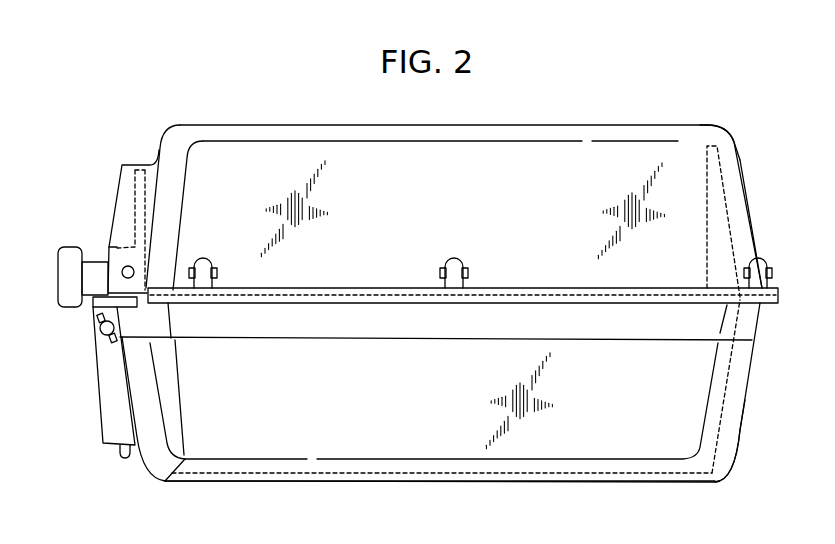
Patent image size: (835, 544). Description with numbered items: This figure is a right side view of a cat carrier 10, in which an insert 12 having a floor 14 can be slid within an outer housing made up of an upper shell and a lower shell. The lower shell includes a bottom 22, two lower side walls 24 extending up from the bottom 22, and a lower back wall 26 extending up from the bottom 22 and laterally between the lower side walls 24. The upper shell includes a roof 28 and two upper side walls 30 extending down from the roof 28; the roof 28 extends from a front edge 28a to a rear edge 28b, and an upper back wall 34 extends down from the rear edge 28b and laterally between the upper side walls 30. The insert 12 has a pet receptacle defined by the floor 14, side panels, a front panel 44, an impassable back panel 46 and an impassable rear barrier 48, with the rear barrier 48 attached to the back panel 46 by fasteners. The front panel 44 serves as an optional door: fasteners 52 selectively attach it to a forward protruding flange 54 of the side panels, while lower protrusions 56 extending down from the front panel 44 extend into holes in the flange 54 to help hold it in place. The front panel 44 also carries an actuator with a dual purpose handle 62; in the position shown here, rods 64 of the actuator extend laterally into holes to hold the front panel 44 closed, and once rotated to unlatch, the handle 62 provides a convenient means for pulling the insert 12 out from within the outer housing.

The cat carrier 10 is at (112, 82).
The insert 12 is at (147, 475).
The floor 14 is at (617, 474).
The bottom 22 is at (458, 483).
The lower side walls 24 is at (285, 425).
The lower back wall 26 is at (740, 423).
The roof 28 is at (548, 125).
The front edge 28a is at (168, 127).
The rear edge 28b is at (720, 123).
The upper side walls 30 is at (278, 158).
The upper back wall 34 is at (740, 167).
The front panel 44 is at (130, 198).
The back panel 46 is at (723, 397).
The rear barrier 48 is at (725, 198).
The fasteners 52 is at (98, 337).
The flange 54 is at (98, 393).
The lower protrusions 56 is at (122, 457).
The handle 62 is at (68, 247).
The rods 64 is at (134, 266).